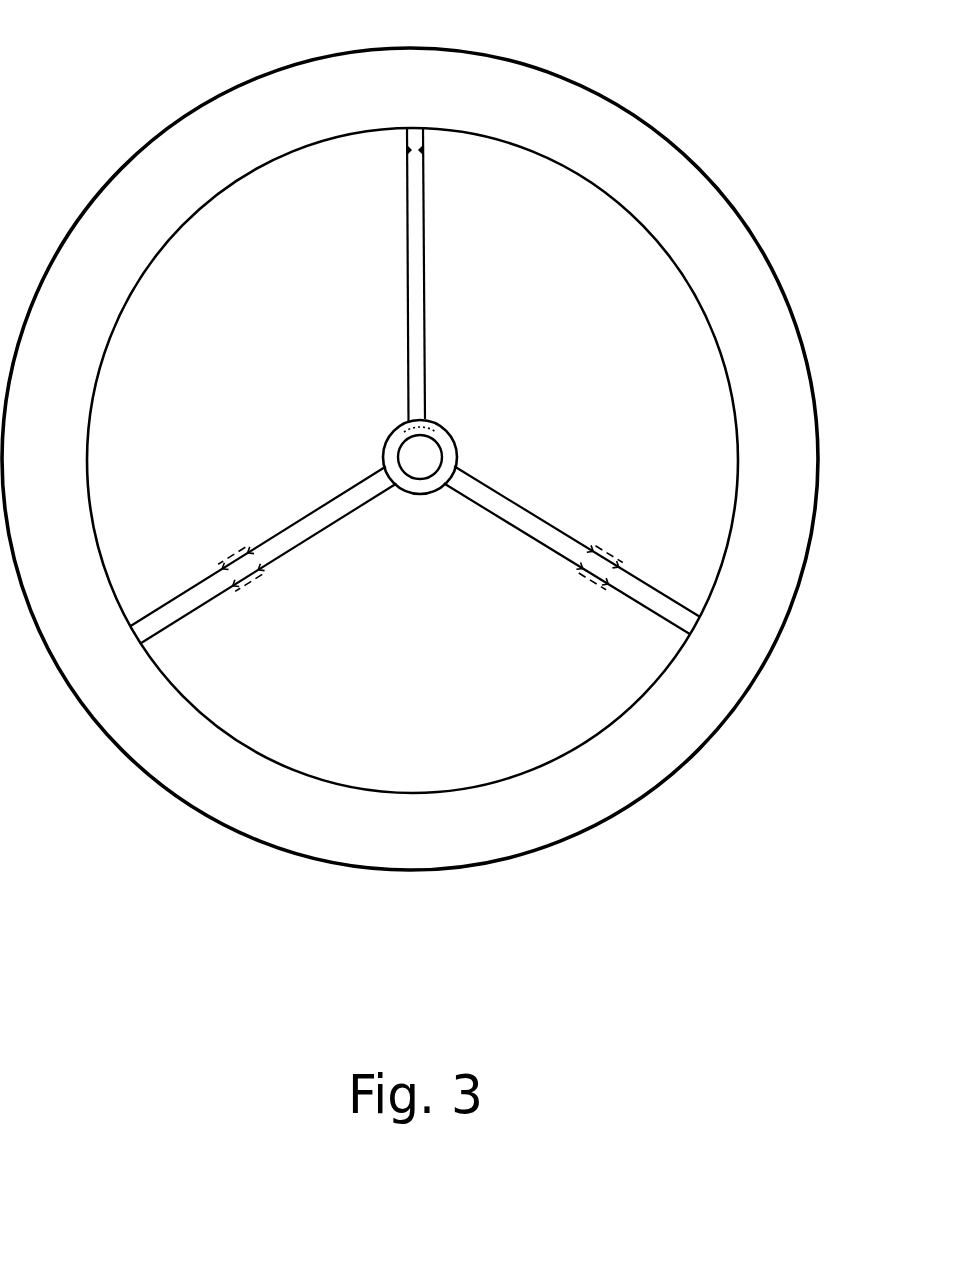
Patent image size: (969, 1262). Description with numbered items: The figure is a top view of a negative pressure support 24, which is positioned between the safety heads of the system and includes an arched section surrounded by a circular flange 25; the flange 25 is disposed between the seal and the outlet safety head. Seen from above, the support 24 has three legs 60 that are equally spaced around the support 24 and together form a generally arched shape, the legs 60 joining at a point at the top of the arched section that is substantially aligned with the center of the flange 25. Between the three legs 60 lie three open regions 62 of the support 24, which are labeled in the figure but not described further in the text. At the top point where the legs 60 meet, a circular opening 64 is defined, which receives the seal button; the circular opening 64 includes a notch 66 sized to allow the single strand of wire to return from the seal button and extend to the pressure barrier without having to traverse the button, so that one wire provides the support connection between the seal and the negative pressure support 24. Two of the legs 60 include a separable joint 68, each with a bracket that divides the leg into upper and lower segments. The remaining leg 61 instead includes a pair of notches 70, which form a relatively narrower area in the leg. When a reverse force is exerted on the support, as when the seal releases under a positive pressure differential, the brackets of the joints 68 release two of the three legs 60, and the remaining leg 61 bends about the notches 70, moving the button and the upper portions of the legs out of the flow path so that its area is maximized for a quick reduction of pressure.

The negative pressure support 24 is at (130, 90).
The circular flange 25 is at (498, 88).
The legs 60 is at (328, 510).
The remaining leg 61 is at (417, 290).
The open region between spokes 62 is at (285, 341).
The circular opening 64 is at (425, 487).
The notch 66 is at (428, 431).
The separable joint 68 is at (243, 578).
The notches 70 is at (410, 151).